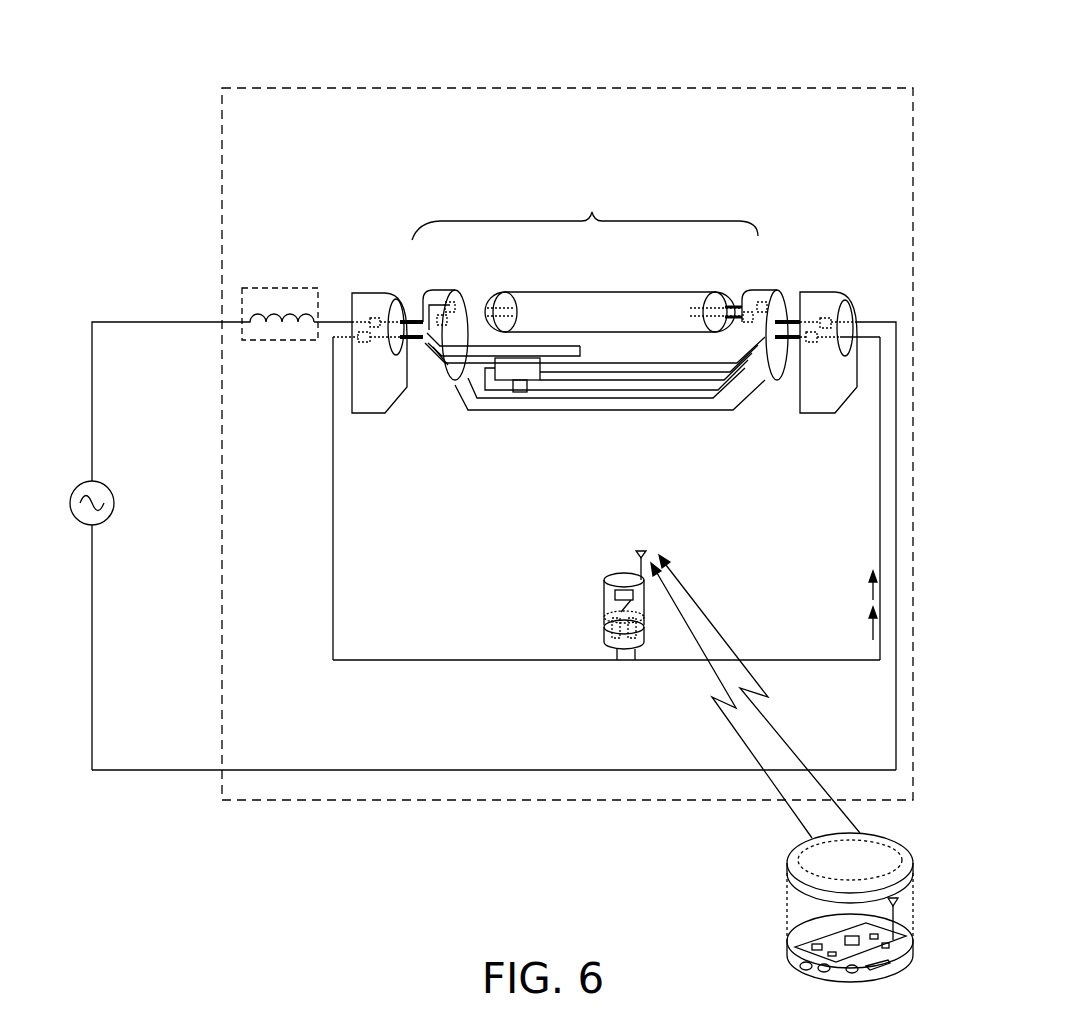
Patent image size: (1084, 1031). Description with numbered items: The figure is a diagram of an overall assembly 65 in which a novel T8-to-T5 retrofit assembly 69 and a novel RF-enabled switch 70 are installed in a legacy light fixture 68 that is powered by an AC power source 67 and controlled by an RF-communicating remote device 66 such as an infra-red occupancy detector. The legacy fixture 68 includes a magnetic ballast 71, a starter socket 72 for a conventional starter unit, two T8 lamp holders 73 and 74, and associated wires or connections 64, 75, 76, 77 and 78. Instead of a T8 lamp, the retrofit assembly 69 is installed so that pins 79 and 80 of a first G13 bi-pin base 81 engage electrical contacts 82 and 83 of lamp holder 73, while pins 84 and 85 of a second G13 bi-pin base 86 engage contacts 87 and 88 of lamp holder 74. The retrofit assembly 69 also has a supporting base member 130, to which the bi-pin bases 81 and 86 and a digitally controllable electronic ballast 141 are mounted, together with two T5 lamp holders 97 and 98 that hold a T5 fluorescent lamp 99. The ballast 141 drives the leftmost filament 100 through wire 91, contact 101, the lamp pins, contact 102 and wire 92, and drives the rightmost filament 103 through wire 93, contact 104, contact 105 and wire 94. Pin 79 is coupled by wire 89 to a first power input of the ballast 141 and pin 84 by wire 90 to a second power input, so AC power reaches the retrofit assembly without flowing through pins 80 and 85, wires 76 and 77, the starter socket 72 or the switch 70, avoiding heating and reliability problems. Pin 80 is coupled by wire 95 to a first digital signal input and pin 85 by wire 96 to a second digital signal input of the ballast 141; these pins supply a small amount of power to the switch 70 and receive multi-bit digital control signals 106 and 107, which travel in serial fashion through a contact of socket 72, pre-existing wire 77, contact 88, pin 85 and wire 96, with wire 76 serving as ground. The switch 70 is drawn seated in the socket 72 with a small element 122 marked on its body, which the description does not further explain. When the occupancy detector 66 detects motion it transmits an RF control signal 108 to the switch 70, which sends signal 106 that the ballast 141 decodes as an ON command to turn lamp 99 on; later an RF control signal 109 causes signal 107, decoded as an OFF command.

The assembly 65 is at (168, 56).
The light fixture 68 is at (575, 88).
The T8-to-T5 retrofit assembly 69 is at (592, 212).
The wire or connection 64 is at (237, 340).
The magnetic ballast 71 is at (284, 288).
The wire or connection 78 is at (337, 322).
The AC power source 67 is at (108, 519).
The wire or connection 75 is at (333, 770).
The wire or conductor 76 is at (430, 661).
The wire or conductor 77 is at (787, 661).
The T8 lamp holder 73 is at (379, 424).
The electrical contact 82 is at (373, 316).
The electrical contact 83 is at (360, 342).
The pin 79 is at (408, 320).
The pin 80 is at (410, 341).
The first G13 bi-pin base 81 is at (432, 292).
The contact 102 is at (438, 314).
The contact 101 is at (452, 300).
The T5 lamp holder 97 is at (470, 290).
The T5 lamp holder 98 is at (735, 285).
The T5 fluorescent lamp 99 is at (740, 283).
The leftmost filament 100 is at (513, 312).
The filament 103 is at (686, 311).
The second G13 bi-pin base 86 is at (778, 292).
The contact 105 is at (747, 311).
The contact 104 is at (763, 300).
The pin 84 is at (789, 320).
The pin 85 is at (790, 340).
The T8 lamp holder 74 is at (816, 424).
The electrical contact 87 is at (831, 318).
The electrical contact 88 is at (817, 343).
The wire or conductor 91 is at (583, 347).
The wire or conductor 92 is at (586, 356).
The wire or conductor 94 is at (670, 366).
The wire or conductor 93 is at (691, 374).
The wire or conductor 90 is at (707, 382).
The wire or conductor 96 is at (537, 391).
The wire or conductor 95 is at (500, 399).
The supporting base member 130 is at (634, 411).
The wire or conductor 89 is at (470, 372).
The digitally controllable electronic ballast 141 is at (519, 393).
The RF-enabled switch 70 is at (594, 584).
The switch element 122 is at (644, 612).
The starter socket 72 is at (603, 638).
The multi-bit digital control signal 106 is at (865, 596).
The multi-bit digital control signal 107 is at (865, 630).
The RF control signal 108 is at (736, 730).
The RF control signal 109 is at (786, 742).
The RF-communicating remote device 66 is at (768, 911).